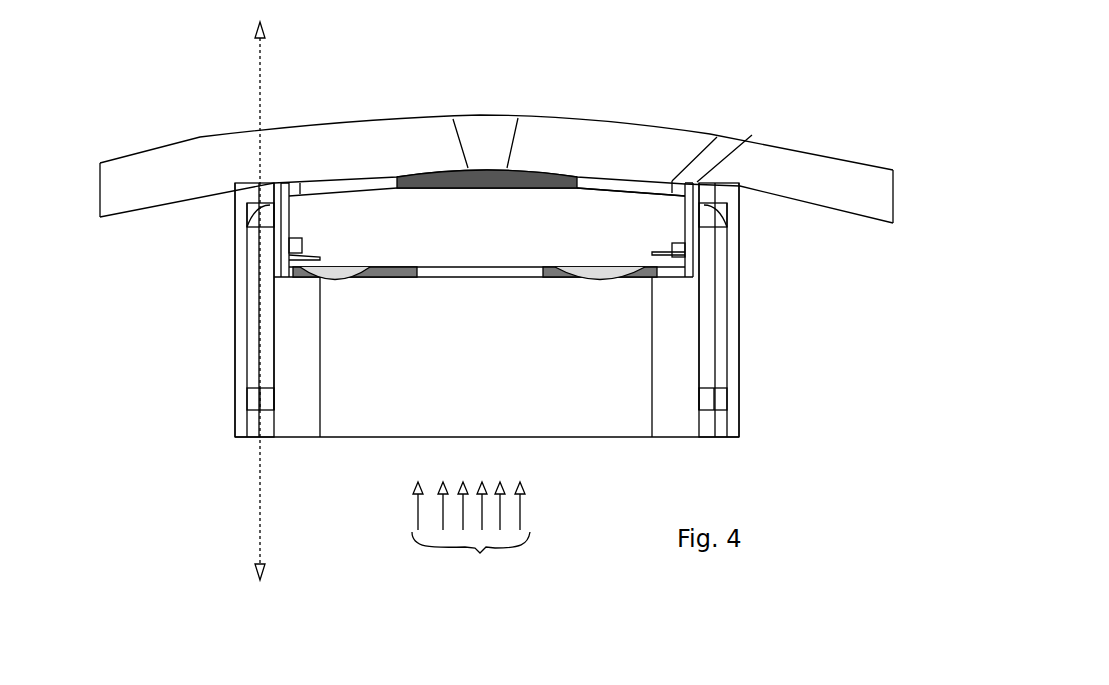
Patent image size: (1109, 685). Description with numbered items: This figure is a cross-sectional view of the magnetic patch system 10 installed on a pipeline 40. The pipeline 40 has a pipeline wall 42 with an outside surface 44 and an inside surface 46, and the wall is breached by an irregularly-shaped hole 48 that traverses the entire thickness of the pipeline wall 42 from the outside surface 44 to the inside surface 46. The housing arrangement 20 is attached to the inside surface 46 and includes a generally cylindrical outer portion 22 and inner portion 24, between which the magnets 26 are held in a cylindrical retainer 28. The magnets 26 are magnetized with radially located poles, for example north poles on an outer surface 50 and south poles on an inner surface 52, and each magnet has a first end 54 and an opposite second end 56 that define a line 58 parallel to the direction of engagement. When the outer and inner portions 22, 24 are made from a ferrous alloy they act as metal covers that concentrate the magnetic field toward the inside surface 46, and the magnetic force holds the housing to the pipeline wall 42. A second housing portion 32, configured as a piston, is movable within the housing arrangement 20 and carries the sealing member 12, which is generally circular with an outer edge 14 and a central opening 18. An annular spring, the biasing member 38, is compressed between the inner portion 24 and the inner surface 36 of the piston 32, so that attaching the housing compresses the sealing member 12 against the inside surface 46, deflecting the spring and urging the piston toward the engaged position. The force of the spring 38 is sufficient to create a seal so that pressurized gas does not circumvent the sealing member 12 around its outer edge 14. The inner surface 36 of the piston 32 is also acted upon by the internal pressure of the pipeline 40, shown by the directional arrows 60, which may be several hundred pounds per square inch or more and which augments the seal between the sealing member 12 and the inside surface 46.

The magnetic patch system 10 is at (143, 400).
The sealing member 12 is at (647, 190).
The outer edge 14 is at (717, 136).
The opening 18 is at (420, 172).
The housing arrangement 20 is at (797, 262).
The outer portion 22 is at (232, 417).
The inner portion 24 is at (305, 440).
The magnets 26 is at (253, 330).
The retainer 28 is at (253, 397).
The second housing portion 32 is at (501, 246).
The inner surface 36 is at (455, 267).
The biasing member 38 is at (555, 267).
The pipeline 40 is at (531, 163).
The pipeline wall 42 is at (897, 187).
The outside surface 44 is at (873, 133).
The inside surface 46 is at (163, 202).
The hole 48 is at (460, 132).
The outer surface 50 is at (247, 273).
The inner surface 52 is at (277, 367).
The first end 54 is at (250, 206).
The second end 56 is at (267, 403).
The line 58 is at (257, 63).
The directional arrows 60 is at (488, 573).